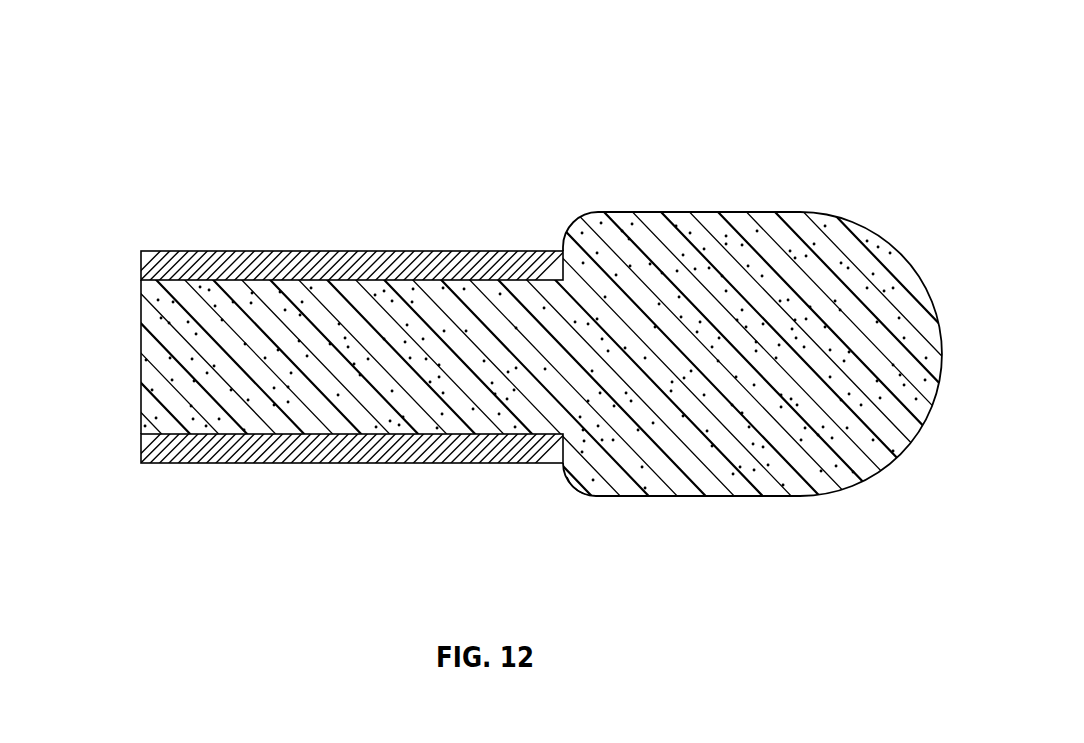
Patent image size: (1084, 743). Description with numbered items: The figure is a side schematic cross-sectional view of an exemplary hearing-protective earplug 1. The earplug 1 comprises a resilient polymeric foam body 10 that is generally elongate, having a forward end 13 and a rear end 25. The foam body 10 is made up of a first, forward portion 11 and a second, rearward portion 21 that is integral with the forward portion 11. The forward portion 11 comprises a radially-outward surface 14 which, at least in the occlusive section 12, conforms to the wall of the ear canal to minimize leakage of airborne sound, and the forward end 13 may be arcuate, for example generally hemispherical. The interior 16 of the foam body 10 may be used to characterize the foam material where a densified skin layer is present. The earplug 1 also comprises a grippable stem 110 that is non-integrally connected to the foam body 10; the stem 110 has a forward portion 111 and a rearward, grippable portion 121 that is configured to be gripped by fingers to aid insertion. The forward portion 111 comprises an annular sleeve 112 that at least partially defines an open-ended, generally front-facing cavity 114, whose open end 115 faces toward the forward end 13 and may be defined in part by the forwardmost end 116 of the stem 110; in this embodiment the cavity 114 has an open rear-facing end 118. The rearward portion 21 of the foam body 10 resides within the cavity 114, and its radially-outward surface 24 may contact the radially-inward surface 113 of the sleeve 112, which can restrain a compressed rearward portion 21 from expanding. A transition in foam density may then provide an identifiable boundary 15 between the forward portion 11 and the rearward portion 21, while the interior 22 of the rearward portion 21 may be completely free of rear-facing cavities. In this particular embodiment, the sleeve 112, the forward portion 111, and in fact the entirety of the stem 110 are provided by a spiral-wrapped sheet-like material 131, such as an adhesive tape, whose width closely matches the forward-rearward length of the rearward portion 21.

The hearing-protective earplug 1 is at (326, 44).
The resilient polymeric foam body 10 is at (852, 96).
The first, forward portion 11 is at (872, 252).
The occlusive section 12 is at (713, 497).
The forward end 13 is at (928, 451).
The radially-outward surface 14 is at (690, 212).
The boundary 15 is at (560, 383).
The interior 16 is at (752, 369).
The second, rearward portion 21 is at (207, 281).
The interior 22 is at (264, 369).
The radially-outward surface 24 is at (407, 281).
The rear end 25 is at (140, 398).
The grippable stem 110 is at (198, 151).
The forward portion 111 is at (213, 449).
The annular sleeve 112 is at (292, 463).
The radially-inward surface 113 is at (426, 433).
The open-ended cavity 114 is at (374, 369).
The open end 115 is at (566, 331).
The forwardmost end 116 is at (564, 263).
The open rear-facing end 118 is at (118, 318).
The rearward, grippable portion 121 is at (206, 577).
The spiral-wrapped sheet-like material 131 is at (251, 250).